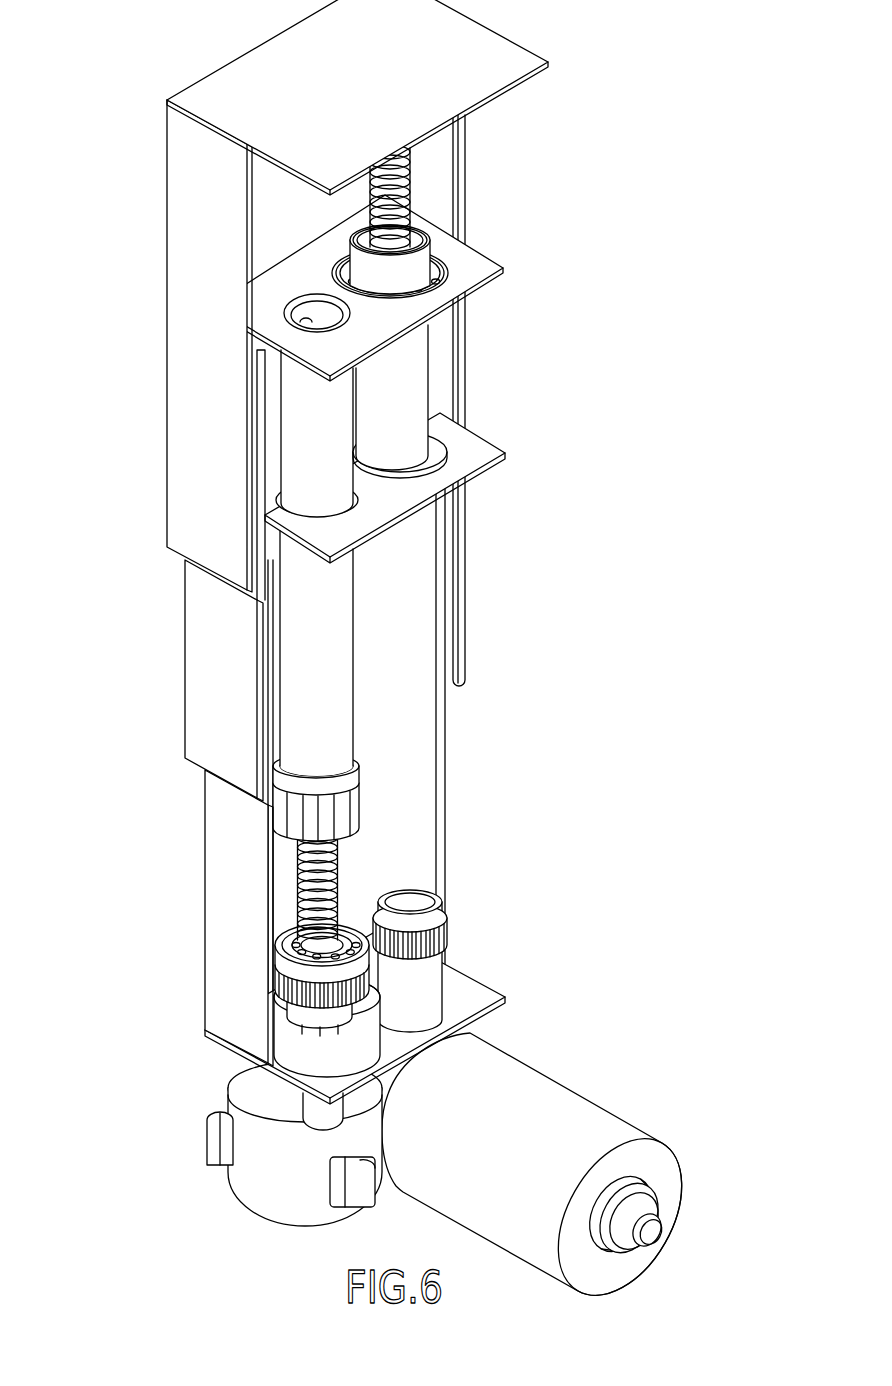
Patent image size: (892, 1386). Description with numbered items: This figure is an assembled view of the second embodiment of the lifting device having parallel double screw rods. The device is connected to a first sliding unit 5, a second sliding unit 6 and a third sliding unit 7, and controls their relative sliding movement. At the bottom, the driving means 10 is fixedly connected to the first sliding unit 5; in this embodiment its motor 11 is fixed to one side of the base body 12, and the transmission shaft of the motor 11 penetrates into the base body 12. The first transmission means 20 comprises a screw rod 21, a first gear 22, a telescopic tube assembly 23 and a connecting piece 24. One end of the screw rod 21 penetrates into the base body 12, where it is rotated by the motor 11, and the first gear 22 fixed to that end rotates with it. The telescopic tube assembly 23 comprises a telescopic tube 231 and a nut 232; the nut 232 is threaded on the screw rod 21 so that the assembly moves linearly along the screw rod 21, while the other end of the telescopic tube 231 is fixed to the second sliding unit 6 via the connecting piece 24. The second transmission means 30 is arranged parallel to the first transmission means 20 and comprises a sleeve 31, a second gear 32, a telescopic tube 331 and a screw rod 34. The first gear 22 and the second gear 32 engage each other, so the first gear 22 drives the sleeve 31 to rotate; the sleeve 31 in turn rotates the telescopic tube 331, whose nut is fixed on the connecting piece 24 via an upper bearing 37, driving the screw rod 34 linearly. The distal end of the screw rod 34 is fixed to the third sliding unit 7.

The first sliding unit 5 is at (215, 899).
The second sliding unit 6 is at (198, 658).
The third sliding unit 7 is at (178, 325).
The driving means 10 is at (401, 1166).
The motor 11 is at (548, 1090).
The base body 12 is at (260, 1198).
The first transmission means 20 is at (360, 648).
The screw rod 21 is at (338, 866).
The first gear 22 is at (292, 989).
The telescopic tube assembly 23 is at (421, 799).
The telescopic tube 231 is at (345, 730).
The nut 232 is at (340, 802).
The connecting piece 24 is at (475, 268).
The second transmission means 30 is at (447, 703).
The sleeve 31 is at (420, 633).
The second gear 32 is at (428, 925).
The telescopic tube 331 is at (418, 388).
The screw rod 34 is at (411, 187).
The upper bearing 37 is at (445, 257).